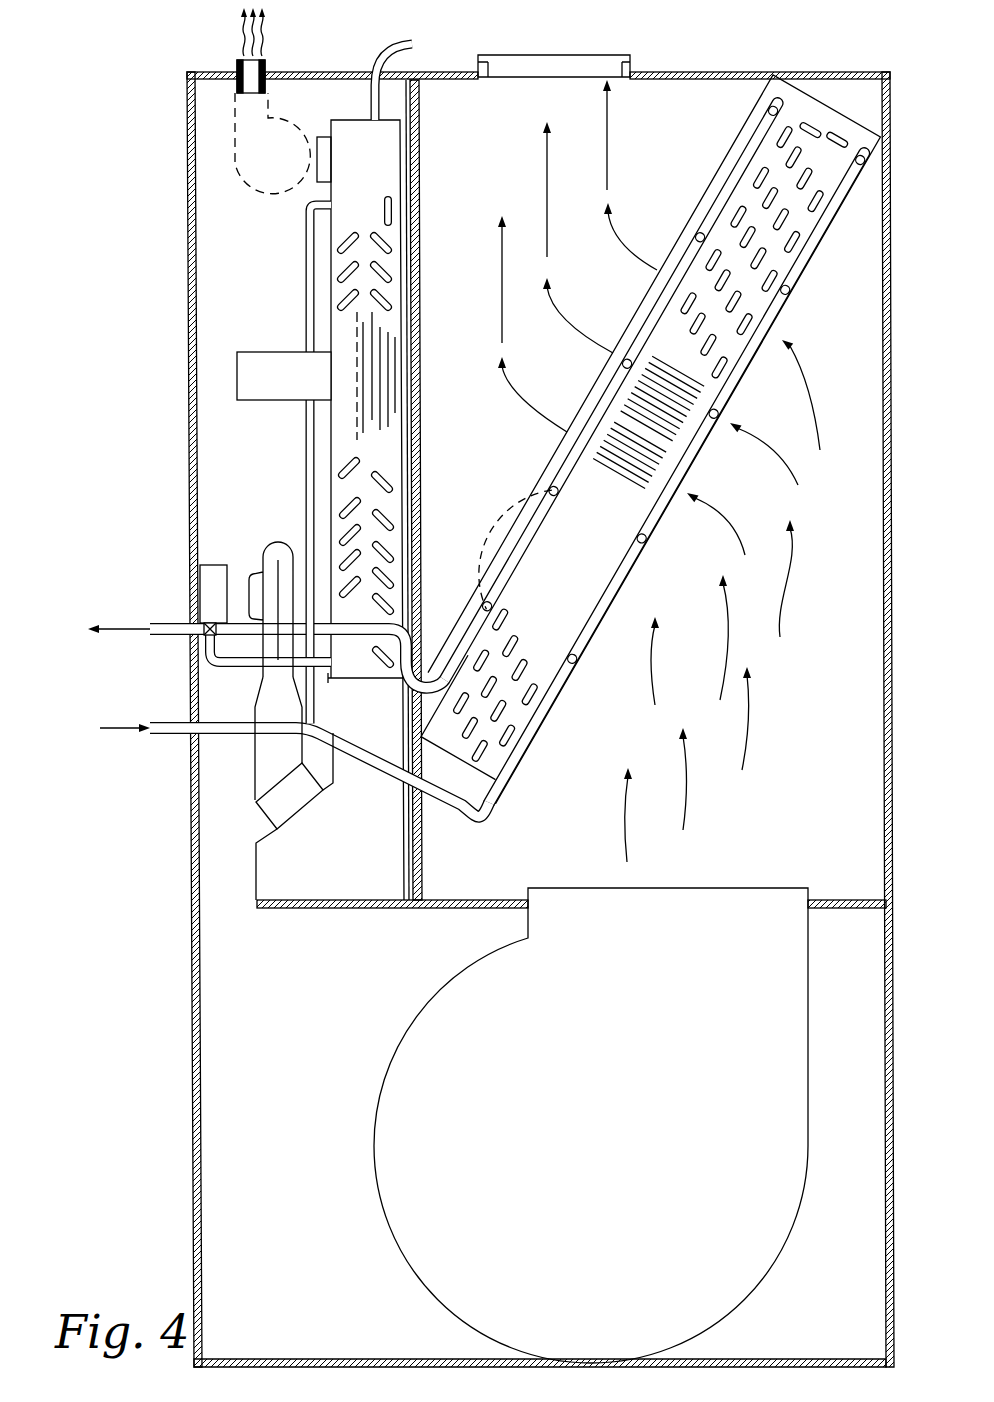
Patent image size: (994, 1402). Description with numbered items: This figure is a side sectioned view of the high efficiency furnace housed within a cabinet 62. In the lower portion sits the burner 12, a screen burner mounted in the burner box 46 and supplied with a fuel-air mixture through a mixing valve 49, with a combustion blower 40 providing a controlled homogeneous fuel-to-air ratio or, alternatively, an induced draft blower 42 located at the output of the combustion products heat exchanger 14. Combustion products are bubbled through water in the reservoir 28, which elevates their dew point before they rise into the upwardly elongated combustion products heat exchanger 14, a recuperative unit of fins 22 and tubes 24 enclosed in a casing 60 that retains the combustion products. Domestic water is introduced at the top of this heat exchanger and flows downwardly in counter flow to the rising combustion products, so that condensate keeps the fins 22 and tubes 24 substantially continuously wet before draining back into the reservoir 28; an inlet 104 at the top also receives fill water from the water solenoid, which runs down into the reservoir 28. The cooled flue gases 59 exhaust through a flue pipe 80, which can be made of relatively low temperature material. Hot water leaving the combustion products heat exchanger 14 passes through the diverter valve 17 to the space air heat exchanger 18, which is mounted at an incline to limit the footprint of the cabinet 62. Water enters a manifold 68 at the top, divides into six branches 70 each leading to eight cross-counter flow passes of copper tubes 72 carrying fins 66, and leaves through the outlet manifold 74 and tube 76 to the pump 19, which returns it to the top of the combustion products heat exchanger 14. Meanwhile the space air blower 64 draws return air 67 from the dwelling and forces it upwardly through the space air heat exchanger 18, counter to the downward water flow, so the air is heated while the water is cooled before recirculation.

The burner 12 is at (260, 813).
The combustion products heat exchanger 14 is at (410, 172).
The diverter valve 17 is at (224, 565).
The space air heat exchanger 18 is at (634, 439).
The pump 19 is at (275, 352).
The fins 22 is at (397, 374).
The tubes 24 is at (398, 482).
The reservoir 28 is at (342, 886).
The combustion blower 40 is at (258, 560).
The blower 42 is at (241, 175).
The burner box 46 is at (256, 864).
The mixing valve 49 is at (252, 707).
The flue gases 59 is at (266, 46).
The casing 60 is at (400, 418).
The cabinet 62 is at (894, 655).
The space air blower 64 is at (380, 1203).
The fins 66 is at (648, 422).
The return air 67 is at (757, 742).
The manifold 68 is at (708, 212).
The branches 70 is at (480, 551).
The copper tubes 72 is at (640, 440).
The outlet manifold 74 is at (598, 630).
The tube 76 is at (383, 777).
The flue pipe 80 is at (236, 66).
The inlet 104 is at (373, 60).